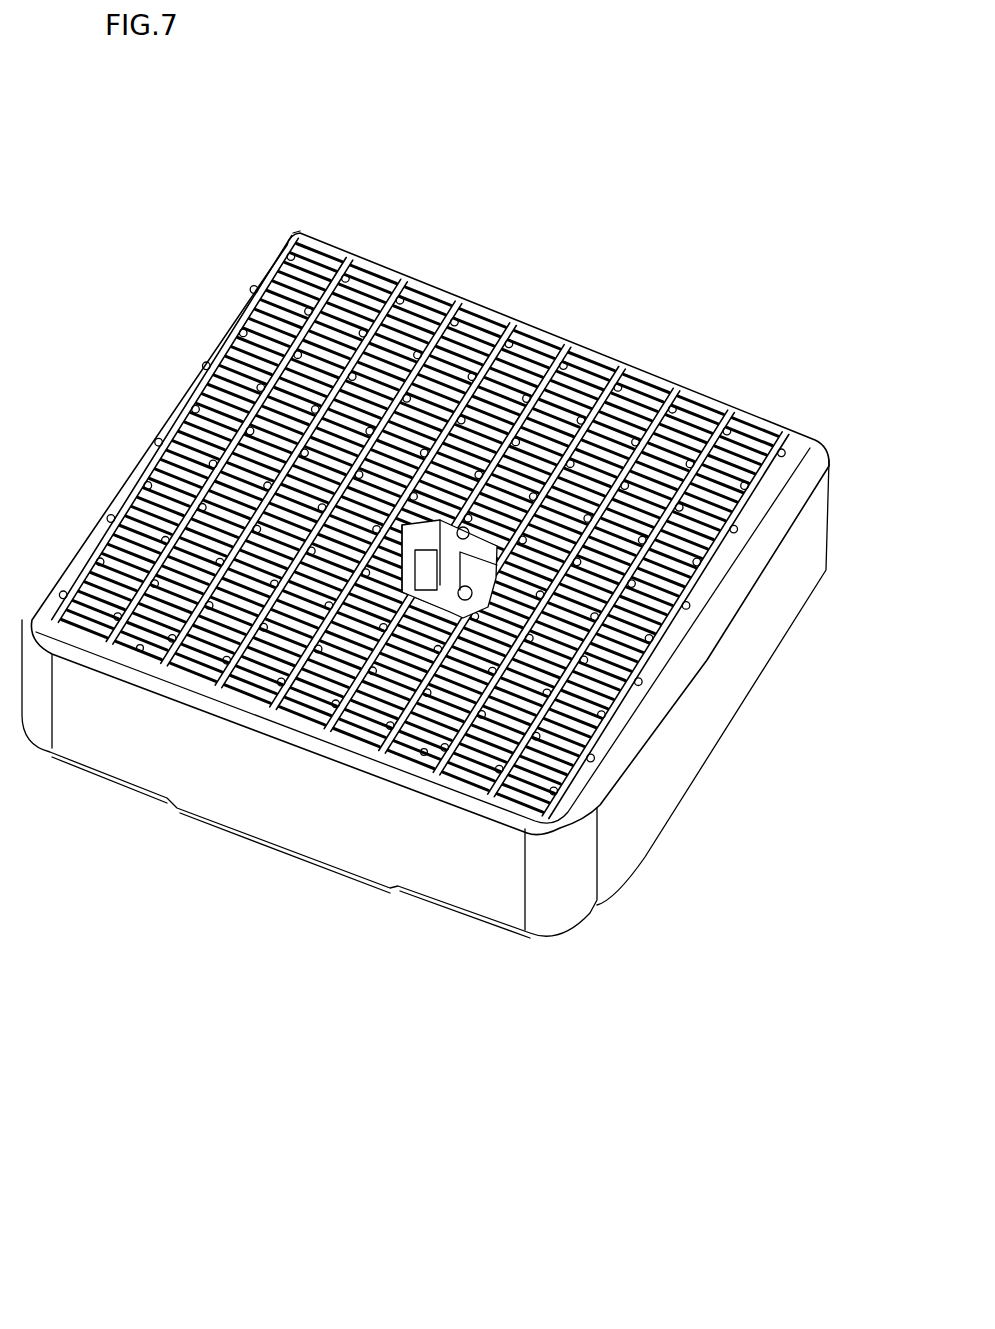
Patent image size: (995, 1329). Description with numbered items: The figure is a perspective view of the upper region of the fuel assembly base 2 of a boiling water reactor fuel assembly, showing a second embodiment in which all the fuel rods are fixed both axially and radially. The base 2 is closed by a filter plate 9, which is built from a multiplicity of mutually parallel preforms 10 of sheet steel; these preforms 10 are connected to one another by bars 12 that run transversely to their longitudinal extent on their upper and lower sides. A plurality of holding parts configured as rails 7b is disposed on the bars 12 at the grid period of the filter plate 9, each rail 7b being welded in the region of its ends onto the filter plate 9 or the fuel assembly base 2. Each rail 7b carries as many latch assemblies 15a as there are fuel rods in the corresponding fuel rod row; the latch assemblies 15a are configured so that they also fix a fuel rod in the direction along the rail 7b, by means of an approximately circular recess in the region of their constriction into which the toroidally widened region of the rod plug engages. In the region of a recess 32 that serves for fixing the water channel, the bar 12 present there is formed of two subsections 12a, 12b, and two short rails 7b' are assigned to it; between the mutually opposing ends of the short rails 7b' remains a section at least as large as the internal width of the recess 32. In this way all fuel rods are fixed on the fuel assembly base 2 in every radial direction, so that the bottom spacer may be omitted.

The fuel assembly base 2 is at (668, 776).
The rail 7b is at (467, 482).
The short rail 7b' is at (422, 659).
The filter plate 9 is at (138, 650).
The preform 10 is at (433, 312).
The bar 12 is at (470, 400).
The bar subsection 12a is at (590, 372).
The bar subsection 12b is at (398, 605).
The latch assembly 15a is at (287, 238).
The recess 32 is at (445, 566).